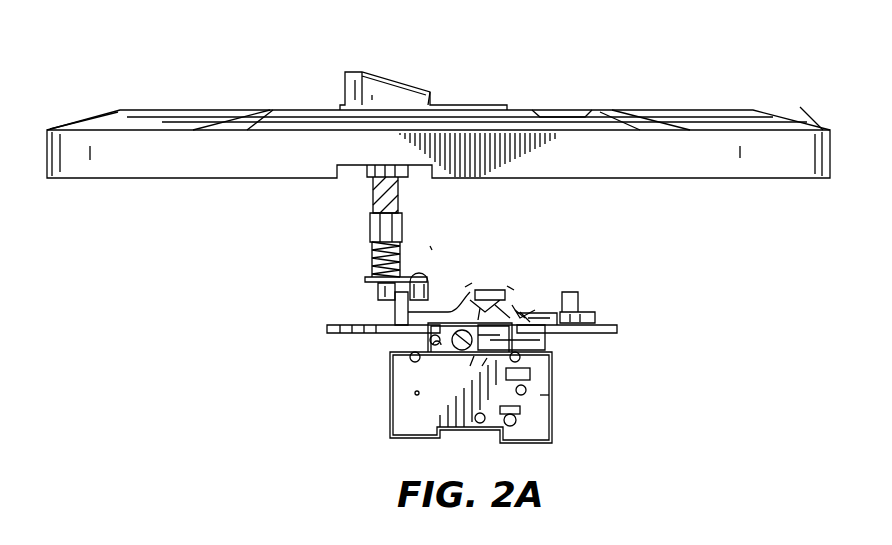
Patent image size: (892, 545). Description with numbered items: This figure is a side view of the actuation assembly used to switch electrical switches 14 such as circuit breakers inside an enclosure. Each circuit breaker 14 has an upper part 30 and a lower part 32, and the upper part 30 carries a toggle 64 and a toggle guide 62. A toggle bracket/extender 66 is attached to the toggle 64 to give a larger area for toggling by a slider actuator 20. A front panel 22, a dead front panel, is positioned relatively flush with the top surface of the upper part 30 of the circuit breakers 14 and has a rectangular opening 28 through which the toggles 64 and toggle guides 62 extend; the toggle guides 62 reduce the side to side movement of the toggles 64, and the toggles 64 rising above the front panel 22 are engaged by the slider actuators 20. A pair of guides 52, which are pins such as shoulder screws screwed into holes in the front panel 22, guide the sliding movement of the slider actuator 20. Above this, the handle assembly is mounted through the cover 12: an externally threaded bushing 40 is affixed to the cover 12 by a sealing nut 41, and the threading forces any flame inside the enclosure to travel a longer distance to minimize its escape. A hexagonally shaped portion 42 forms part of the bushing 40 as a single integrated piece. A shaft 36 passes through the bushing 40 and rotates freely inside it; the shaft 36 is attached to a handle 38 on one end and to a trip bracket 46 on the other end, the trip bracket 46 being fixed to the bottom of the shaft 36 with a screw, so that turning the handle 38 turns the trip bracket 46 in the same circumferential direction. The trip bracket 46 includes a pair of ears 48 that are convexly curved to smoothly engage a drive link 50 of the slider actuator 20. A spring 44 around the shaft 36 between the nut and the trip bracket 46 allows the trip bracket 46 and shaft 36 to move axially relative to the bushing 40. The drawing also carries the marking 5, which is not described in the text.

The cover 12 is at (590, 108).
The handle 38 is at (406, 78).
The sealing nut 41 is at (368, 183).
The externally threaded bushing 40 is at (371, 212).
The hexagonally shaped portion 42 is at (403, 228).
The shaft 36 is at (372, 251).
The spring 44 is at (366, 273).
The trip bracket 46 is at (435, 248).
The ears 48 is at (432, 288).
The drive link 50 is at (386, 308).
The guides 52 is at (392, 340).
The electrical switch 14 is at (384, 405).
The upper part 30 is at (537, 343).
The lower part 32 is at (567, 400).
The toggle guide 62 is at (470, 292).
The section view indicator 5 is at (506, 282).
The toggle bracket/extender 66 is at (505, 312).
The toggle 64 is at (522, 320).
The slider actuator 20 is at (602, 318).
The front panel 22 is at (622, 330).
The rectangular opening 28 is at (524, 312).